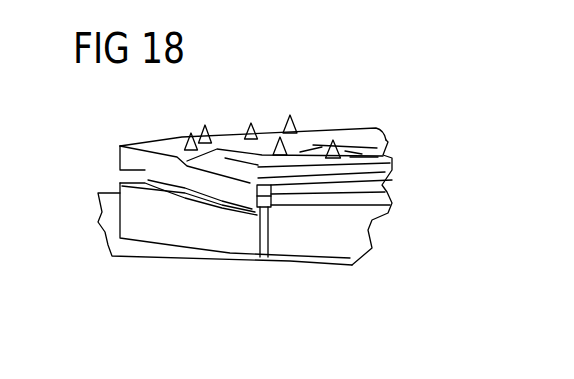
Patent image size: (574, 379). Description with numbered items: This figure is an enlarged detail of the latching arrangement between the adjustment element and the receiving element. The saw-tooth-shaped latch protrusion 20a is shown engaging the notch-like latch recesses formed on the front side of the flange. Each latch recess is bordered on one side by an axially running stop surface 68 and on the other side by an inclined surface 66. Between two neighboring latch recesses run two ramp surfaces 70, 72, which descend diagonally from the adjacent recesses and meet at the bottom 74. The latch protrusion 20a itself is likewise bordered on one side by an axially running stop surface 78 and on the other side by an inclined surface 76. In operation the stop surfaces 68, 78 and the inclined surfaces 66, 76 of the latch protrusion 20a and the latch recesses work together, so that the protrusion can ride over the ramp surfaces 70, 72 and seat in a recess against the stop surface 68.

The latch protrusion 20a is at (255, 210).
The inclined surface 66 is at (262, 188).
The stop surface 68 is at (270, 186).
The ramp surface 70 is at (150, 181).
The ramp surface 72 is at (255, 189).
The bottom 74 is at (238, 209).
The inclined surface 76 is at (250, 212).
The stop surface 78 is at (267, 208).